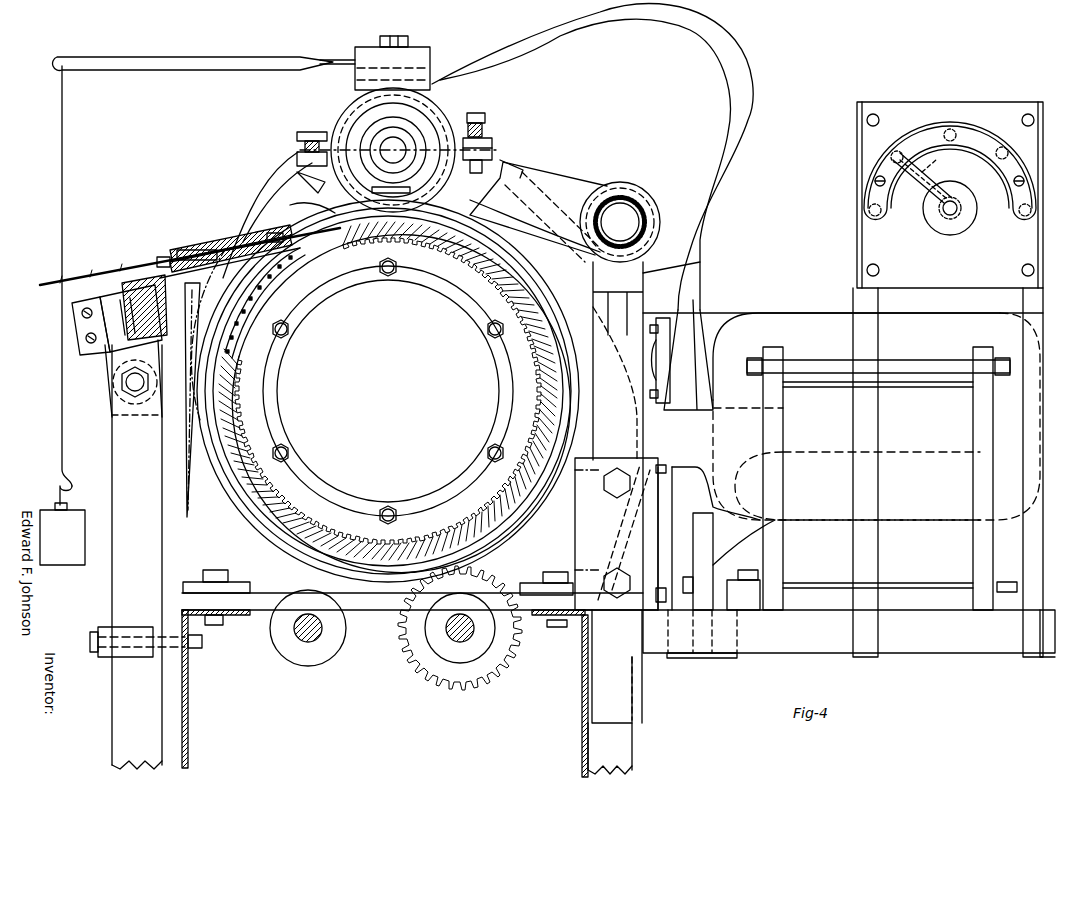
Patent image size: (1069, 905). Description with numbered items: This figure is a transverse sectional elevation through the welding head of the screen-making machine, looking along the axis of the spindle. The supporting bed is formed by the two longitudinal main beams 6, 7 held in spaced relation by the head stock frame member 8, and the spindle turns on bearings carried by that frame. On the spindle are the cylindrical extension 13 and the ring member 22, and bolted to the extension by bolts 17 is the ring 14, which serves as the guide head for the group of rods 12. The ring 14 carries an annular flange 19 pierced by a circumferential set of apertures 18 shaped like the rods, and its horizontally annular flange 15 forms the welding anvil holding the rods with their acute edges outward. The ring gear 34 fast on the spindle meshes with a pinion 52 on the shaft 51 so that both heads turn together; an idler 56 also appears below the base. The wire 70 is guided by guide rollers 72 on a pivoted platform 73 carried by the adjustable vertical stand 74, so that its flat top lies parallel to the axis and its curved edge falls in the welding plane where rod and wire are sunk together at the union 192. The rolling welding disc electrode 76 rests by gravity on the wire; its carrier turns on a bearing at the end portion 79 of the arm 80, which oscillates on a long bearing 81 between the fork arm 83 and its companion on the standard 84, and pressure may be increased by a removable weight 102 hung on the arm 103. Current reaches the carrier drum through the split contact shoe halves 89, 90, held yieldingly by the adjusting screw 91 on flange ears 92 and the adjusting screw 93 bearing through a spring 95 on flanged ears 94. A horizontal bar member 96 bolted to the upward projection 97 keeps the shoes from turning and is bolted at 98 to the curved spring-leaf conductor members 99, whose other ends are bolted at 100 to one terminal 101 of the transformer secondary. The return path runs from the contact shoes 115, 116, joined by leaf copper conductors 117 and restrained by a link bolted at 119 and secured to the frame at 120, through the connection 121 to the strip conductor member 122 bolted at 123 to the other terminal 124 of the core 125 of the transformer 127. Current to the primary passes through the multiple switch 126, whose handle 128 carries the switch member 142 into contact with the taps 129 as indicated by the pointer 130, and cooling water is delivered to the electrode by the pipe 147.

The longitudinal main beam 6 is at (190, 737).
The longitudinal main beam 7 is at (582, 686).
The head stock frame member 8 is at (358, 572).
The rods 12 is at (296, 262).
The cylindrical extension 13 is at (460, 313).
The ring 14 is at (460, 296).
The annular flange 15 is at (420, 245).
The bolts 17 is at (395, 272).
The apertures 18 is at (258, 283).
The annular flange 19 is at (243, 494).
The ring member 22 is at (305, 555).
The ring gear 34 is at (255, 532).
The shaft 51 is at (455, 640).
The pinion 52 is at (480, 680).
The roller 56 is at (300, 636).
The wire 70 is at (92, 280).
The guide rollers 72 is at (158, 258).
The pivoted platform 73 is at (120, 284).
The adjustable vertical stand 74 is at (118, 447).
The welding disc electrode 76 is at (333, 97).
The end portion of arm 79 is at (340, 120).
The arm 80 is at (563, 173).
The long bearing 81 is at (650, 207).
The fork arm 83 is at (662, 226).
The standard 84 is at (637, 310).
The contact shoe half 89 is at (440, 110).
The contact shoe half 90 is at (302, 185).
The adjusting screw 91 is at (297, 133).
The flange ears 92 is at (300, 150).
The adjusting screw 93 is at (484, 115).
The flanged ears 94 is at (492, 148).
The spring 95 is at (485, 128).
The horizontal bar member 96 is at (425, 52).
The upward projection 97 is at (410, 84).
The bolt 98 is at (396, 34).
The spring-leaf conductor members 99 is at (735, 56).
The bolt 100 is at (658, 360).
The terminal 101 is at (710, 320).
The removable weight 102 is at (50, 512).
The arm 103 is at (312, 58).
The contact shoe 115 is at (235, 242).
The contact shoe 116 is at (500, 258).
The leaf copper conductors 117 is at (273, 170).
The bolt 119 is at (198, 248).
The frame attachment 120 is at (183, 455).
The connection 121 is at (665, 268).
The strip conductor member 122 is at (650, 424).
The bolt 123 is at (600, 508).
The terminal 124 is at (682, 475).
The core 125 is at (757, 313).
The multiple switch 126 is at (845, 211).
The transformer 127 is at (840, 510).
The handle 128 is at (970, 222).
The taps 129 is at (1000, 147).
The pointer 130 is at (930, 195).
The multiple switch member 142 is at (930, 168).
The water pipe 147 is at (306, 203).
The welded union 192 is at (250, 480).